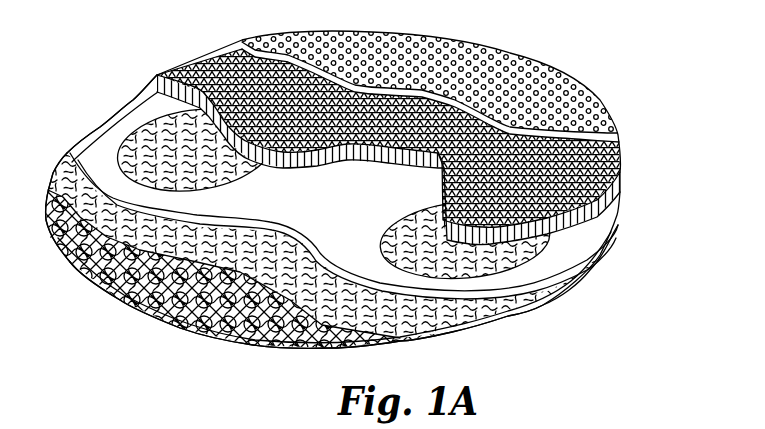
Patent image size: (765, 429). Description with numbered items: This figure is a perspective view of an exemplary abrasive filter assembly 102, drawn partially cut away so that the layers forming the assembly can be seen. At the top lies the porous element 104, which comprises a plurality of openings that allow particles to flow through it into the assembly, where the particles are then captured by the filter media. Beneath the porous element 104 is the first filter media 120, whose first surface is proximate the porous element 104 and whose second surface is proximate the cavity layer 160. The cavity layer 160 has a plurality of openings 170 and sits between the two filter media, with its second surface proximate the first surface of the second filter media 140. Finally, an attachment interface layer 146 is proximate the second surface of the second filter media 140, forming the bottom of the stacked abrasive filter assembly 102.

The abrasive filter assembly 102 is at (143, 46).
The porous element 104 is at (552, 95).
The first filter media 120 is at (621, 162).
The second filter media 140 is at (452, 332).
The attachment interface layer 146 is at (178, 328).
The cavity layer 160 is at (598, 253).
The openings 170 is at (173, 133).